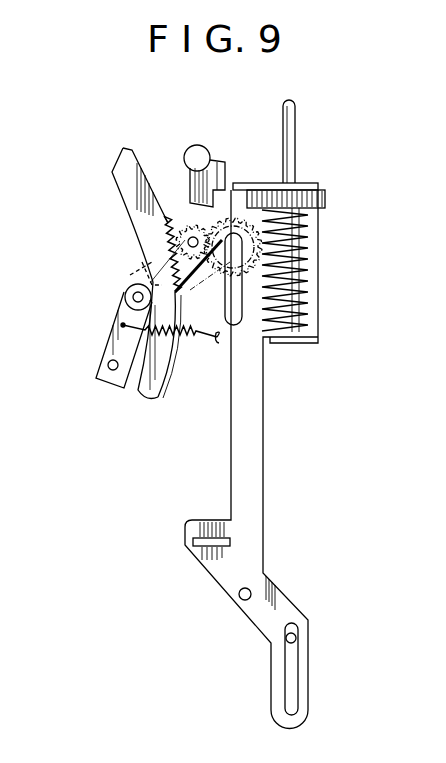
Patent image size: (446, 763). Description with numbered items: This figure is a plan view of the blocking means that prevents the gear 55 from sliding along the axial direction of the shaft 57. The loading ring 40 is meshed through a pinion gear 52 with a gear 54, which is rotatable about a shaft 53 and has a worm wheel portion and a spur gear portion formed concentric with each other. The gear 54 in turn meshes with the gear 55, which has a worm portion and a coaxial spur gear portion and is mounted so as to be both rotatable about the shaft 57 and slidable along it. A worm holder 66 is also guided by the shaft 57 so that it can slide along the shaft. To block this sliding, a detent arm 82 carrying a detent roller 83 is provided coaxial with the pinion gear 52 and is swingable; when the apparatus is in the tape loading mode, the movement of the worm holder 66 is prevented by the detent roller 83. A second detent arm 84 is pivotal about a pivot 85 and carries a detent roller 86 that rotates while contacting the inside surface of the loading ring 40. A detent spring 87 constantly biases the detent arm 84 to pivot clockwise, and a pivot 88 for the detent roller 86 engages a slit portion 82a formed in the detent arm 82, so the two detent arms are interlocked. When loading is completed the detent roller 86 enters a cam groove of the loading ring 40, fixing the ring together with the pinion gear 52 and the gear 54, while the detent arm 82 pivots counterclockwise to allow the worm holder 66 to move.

The loading ring 40 is at (130, 188).
The pinion gear 52 is at (165, 229).
The shaft 53 is at (198, 279).
The gear 54 is at (235, 217).
The gear 55 is at (302, 313).
The shaft 57 is at (296, 122).
The worm holder 66 is at (252, 444).
The detent arm 82 is at (180, 187).
The slit portion 82a is at (142, 263).
The detent roller 83 is at (202, 147).
The detent arm 84 is at (113, 345).
The pivot 85 is at (108, 368).
The detent roller 86 is at (125, 289).
The detent spring 87 is at (194, 342).
The pivot 88 is at (123, 325).